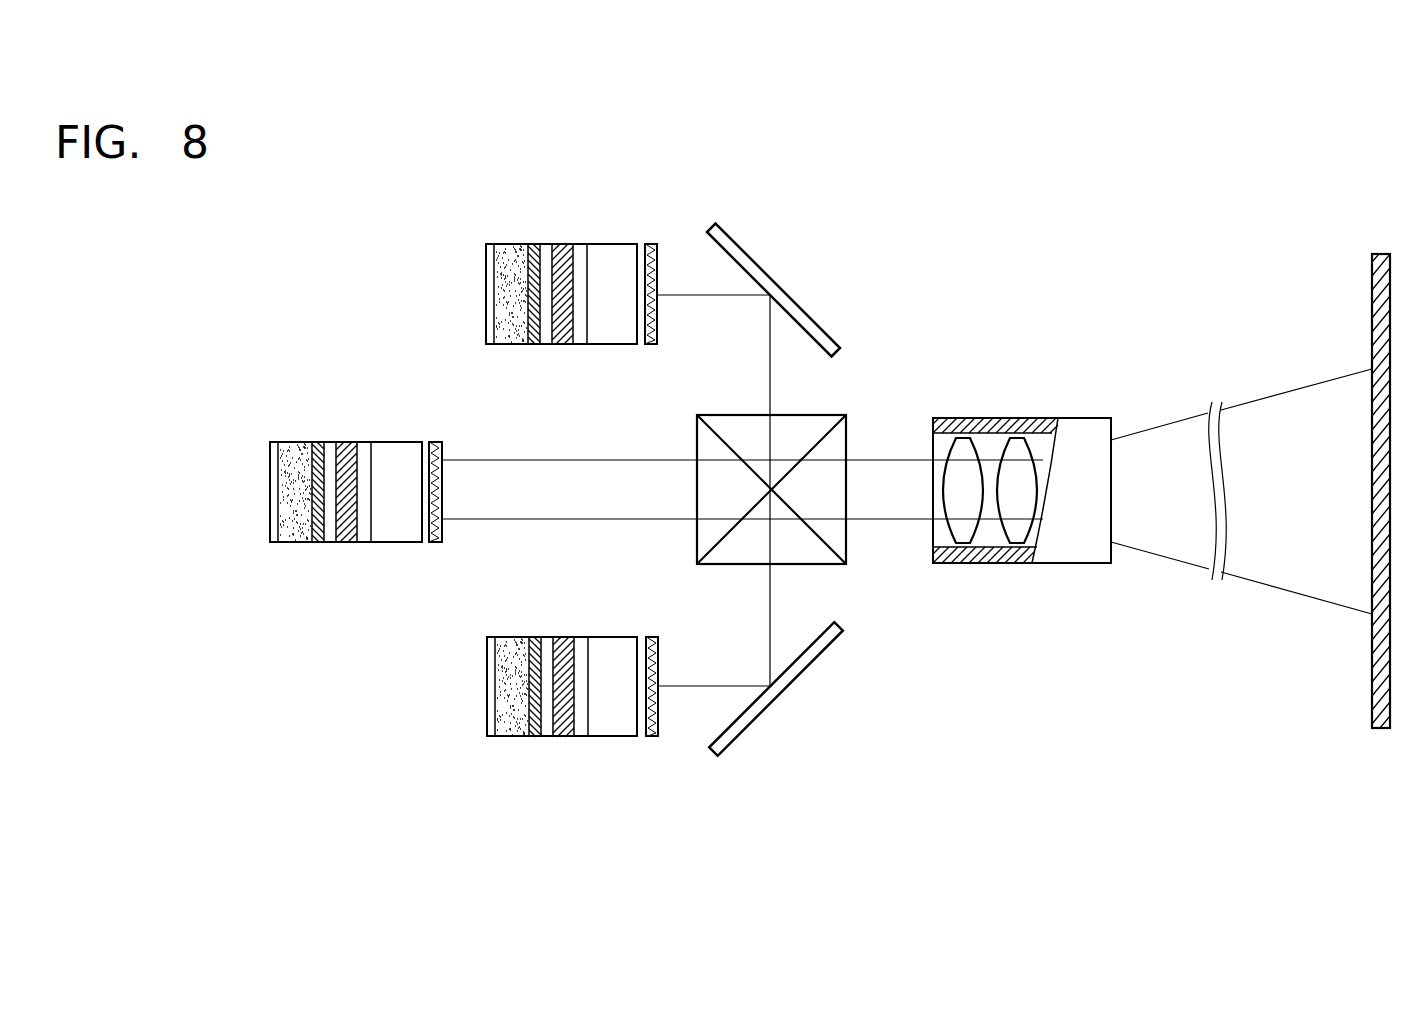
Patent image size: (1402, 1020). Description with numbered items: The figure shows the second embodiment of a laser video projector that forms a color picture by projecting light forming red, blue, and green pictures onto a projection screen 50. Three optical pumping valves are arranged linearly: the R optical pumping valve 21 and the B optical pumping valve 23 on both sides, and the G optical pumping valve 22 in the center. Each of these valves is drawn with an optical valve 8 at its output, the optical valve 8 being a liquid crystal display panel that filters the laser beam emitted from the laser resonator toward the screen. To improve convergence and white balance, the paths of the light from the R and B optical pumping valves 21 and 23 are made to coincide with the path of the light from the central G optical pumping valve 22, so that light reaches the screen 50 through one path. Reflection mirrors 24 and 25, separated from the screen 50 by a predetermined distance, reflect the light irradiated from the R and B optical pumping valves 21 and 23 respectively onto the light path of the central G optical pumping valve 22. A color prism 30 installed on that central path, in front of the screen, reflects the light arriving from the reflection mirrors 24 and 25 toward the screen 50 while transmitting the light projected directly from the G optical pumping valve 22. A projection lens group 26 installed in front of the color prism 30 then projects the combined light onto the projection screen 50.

The optical valve 8 is at (652, 243).
The R optical pumping valve 21 is at (575, 243).
The G optical pumping valve 22 is at (372, 441).
The B optical pumping valve 23 is at (578, 636).
The reflection mirror 24 is at (823, 331).
The reflection mirror 25 is at (728, 749).
The projection lens group 26 is at (1072, 564).
The color prism 30 is at (856, 565).
The projection screen 50 is at (1372, 291).